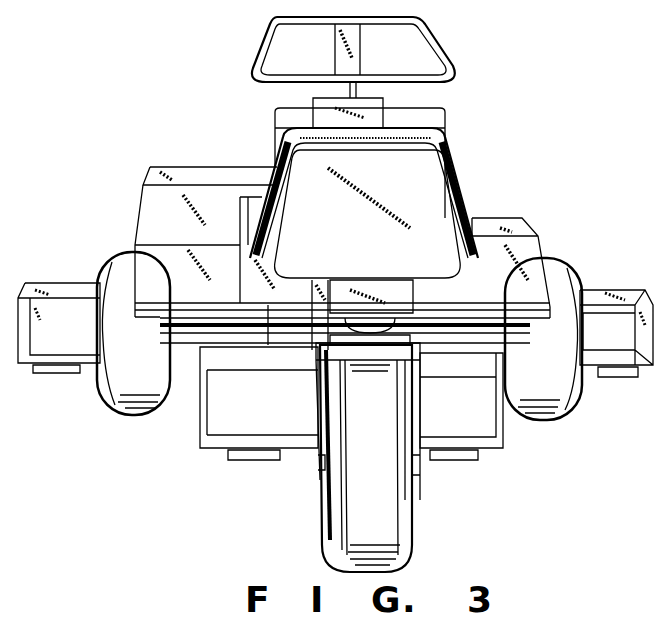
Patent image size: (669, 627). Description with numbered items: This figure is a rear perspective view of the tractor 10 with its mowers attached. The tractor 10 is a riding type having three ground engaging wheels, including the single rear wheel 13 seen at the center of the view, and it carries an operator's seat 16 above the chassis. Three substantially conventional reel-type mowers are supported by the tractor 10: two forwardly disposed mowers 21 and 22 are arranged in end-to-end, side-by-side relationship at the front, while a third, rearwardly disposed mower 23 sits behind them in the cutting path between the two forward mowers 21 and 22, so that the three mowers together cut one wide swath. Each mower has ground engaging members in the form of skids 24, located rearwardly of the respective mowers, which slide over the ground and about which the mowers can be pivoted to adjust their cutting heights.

The tractor 10 is at (227, 158).
The rear wheel 13 is at (408, 535).
The operator's seat 16 is at (445, 135).
The forwardly disposed mower 21 is at (73, 283).
The forwardly disposed mower 22 is at (606, 292).
The rearwardly disposed mower 23 is at (498, 452).
The skids 24 is at (75, 375).